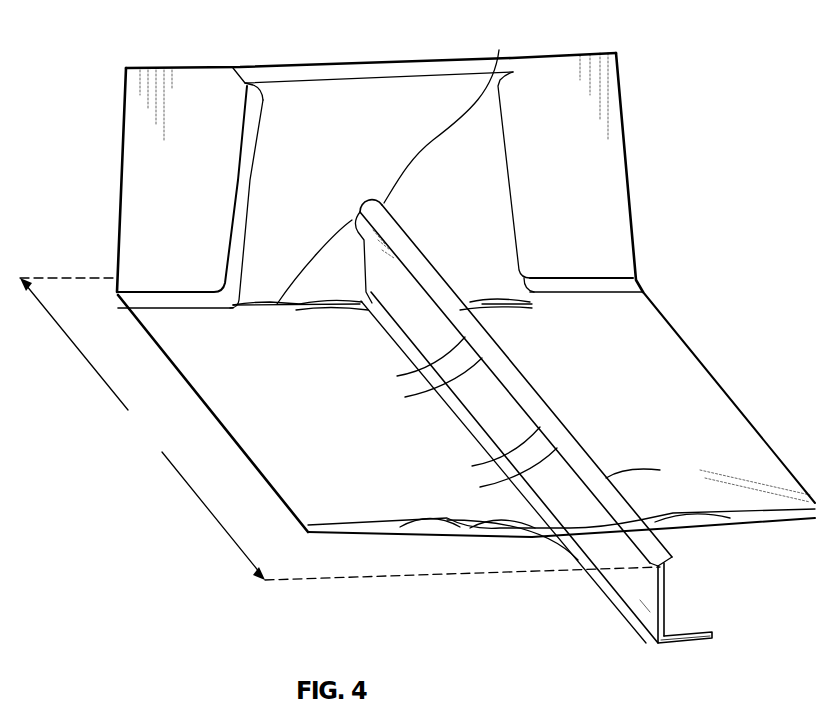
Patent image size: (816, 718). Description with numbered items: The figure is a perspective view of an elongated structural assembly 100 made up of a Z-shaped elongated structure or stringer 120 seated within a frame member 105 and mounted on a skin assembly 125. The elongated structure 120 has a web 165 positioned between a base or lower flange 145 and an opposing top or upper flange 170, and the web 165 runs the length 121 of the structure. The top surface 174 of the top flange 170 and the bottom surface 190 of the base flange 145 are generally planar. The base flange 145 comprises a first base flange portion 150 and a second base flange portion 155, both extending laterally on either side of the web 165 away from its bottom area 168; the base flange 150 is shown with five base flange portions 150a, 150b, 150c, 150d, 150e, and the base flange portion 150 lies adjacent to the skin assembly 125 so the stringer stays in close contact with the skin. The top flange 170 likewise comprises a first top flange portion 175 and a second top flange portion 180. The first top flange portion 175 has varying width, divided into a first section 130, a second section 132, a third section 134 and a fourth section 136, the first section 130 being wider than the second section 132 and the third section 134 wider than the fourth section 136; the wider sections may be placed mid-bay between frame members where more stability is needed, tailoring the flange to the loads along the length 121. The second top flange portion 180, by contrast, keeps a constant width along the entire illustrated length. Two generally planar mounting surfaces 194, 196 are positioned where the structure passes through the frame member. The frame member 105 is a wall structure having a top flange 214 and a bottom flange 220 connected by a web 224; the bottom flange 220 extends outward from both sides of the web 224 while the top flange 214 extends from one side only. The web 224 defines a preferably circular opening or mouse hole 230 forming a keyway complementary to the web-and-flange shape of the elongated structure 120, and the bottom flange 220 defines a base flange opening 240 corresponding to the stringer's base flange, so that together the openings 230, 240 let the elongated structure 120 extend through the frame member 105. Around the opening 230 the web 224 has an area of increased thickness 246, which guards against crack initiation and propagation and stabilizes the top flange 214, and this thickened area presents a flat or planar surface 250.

The elongated structural assembly 100 is at (663, 57).
The frame member 105 is at (372, 53).
The elongated structure 120 is at (557, 360).
The length of the elongated structure 121 is at (340, 429).
The skin assembly 125 is at (755, 473).
The first section 130 is at (584, 550).
The second section 132 is at (493, 456).
The third section 134 is at (437, 372).
The fourth section 136 is at (345, 308).
The base flange 145 is at (638, 644).
The first base flange portion 150 is at (490, 526).
The base flange portion 150a is at (703, 626).
The base flange portion 150b is at (432, 522).
The base flange portion 150c is at (700, 528).
The base flange portion 150d is at (345, 336).
The base flange portion 150e is at (478, 318).
The second base flange portion 155 is at (683, 625).
The web 165 is at (463, 382).
The bottom area of the web 168 is at (636, 608).
The top flange 170 is at (547, 404).
The top surface of the top flange 174 is at (573, 435).
The first top flange portion 175 is at (402, 332).
The second top flange portion 180 is at (602, 470).
The bottom surface of the base flange 190 is at (688, 652).
The mounting surface 194 is at (500, 488).
The mounting surface 196 is at (272, 315).
The top flange of the frame member 214 is at (544, 90).
The bottom flange of the frame member 220 is at (644, 286).
The web of the frame member 224 is at (628, 152).
The opening 230 is at (453, 114).
The base flange opening 240 is at (488, 306).
The area of increased thickness 246 is at (382, 188).
The flat or planar surface 250 is at (457, 230).